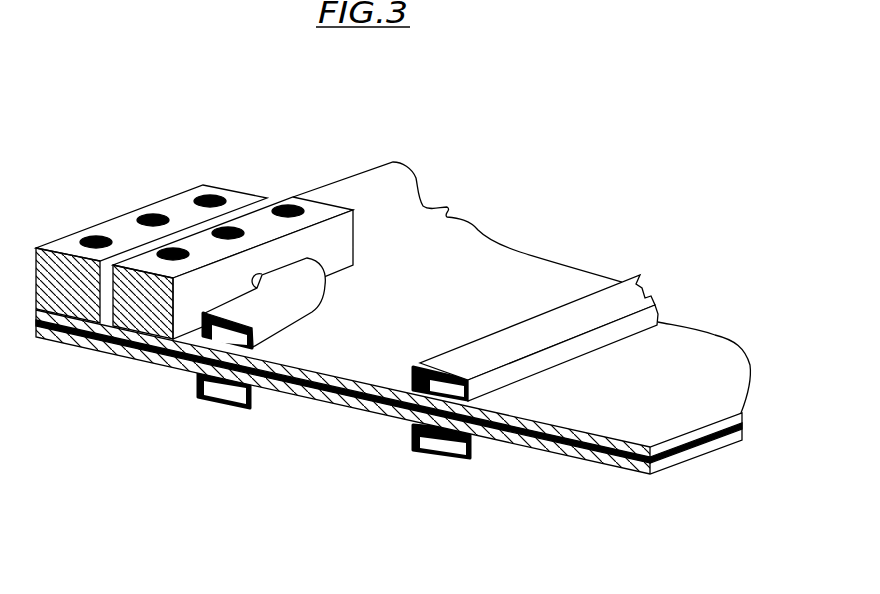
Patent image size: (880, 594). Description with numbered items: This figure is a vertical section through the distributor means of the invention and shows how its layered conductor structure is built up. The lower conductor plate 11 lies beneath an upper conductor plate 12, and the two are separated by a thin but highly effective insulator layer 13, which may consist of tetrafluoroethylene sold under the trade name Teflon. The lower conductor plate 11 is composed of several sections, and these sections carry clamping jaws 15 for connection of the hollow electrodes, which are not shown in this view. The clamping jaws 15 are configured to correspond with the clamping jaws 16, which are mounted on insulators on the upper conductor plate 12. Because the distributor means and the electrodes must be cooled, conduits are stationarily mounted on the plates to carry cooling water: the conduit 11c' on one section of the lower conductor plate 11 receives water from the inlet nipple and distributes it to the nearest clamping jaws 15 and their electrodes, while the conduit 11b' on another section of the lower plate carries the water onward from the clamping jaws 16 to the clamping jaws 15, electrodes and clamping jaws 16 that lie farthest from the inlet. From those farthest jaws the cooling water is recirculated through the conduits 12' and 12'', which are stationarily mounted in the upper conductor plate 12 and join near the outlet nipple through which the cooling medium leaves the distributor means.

The lower conductor plate 11 is at (477, 255).
The conduit 11b' is at (539, 346).
The conduit 11c' is at (311, 302).
The upper conductor plate 12 is at (389, 448).
The conduit 12' is at (449, 451).
The conduit 12'' is at (234, 398).
The insulator layer 13 is at (578, 445).
The clamping jaws 15 is at (320, 217).
The clamping jaws 16 is at (177, 212).